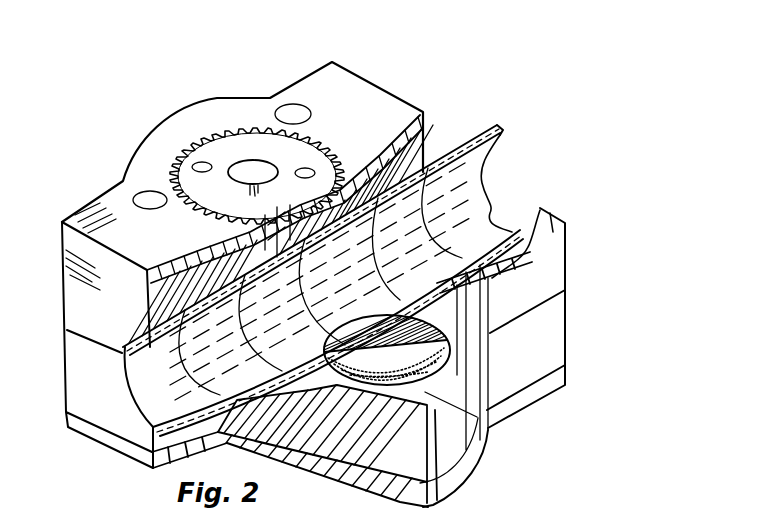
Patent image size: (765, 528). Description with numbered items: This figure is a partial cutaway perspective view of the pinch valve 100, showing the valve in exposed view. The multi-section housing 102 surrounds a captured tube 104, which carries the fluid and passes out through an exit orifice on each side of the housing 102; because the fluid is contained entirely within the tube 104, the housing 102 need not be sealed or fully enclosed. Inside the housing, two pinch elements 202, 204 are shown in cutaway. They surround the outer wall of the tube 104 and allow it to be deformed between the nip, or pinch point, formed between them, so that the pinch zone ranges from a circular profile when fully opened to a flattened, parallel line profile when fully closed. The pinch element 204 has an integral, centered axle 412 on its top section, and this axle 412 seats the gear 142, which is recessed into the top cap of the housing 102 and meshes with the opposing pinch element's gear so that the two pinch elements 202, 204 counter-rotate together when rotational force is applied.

The pinch valve 100 is at (426, 51).
The multi-section housing 102 is at (416, 90).
The tube 104 is at (493, 127).
The gear 142 is at (233, 132).
The pinch element 202 is at (484, 436).
The pinch element 204 is at (348, 190).
The axle 412 is at (252, 176).